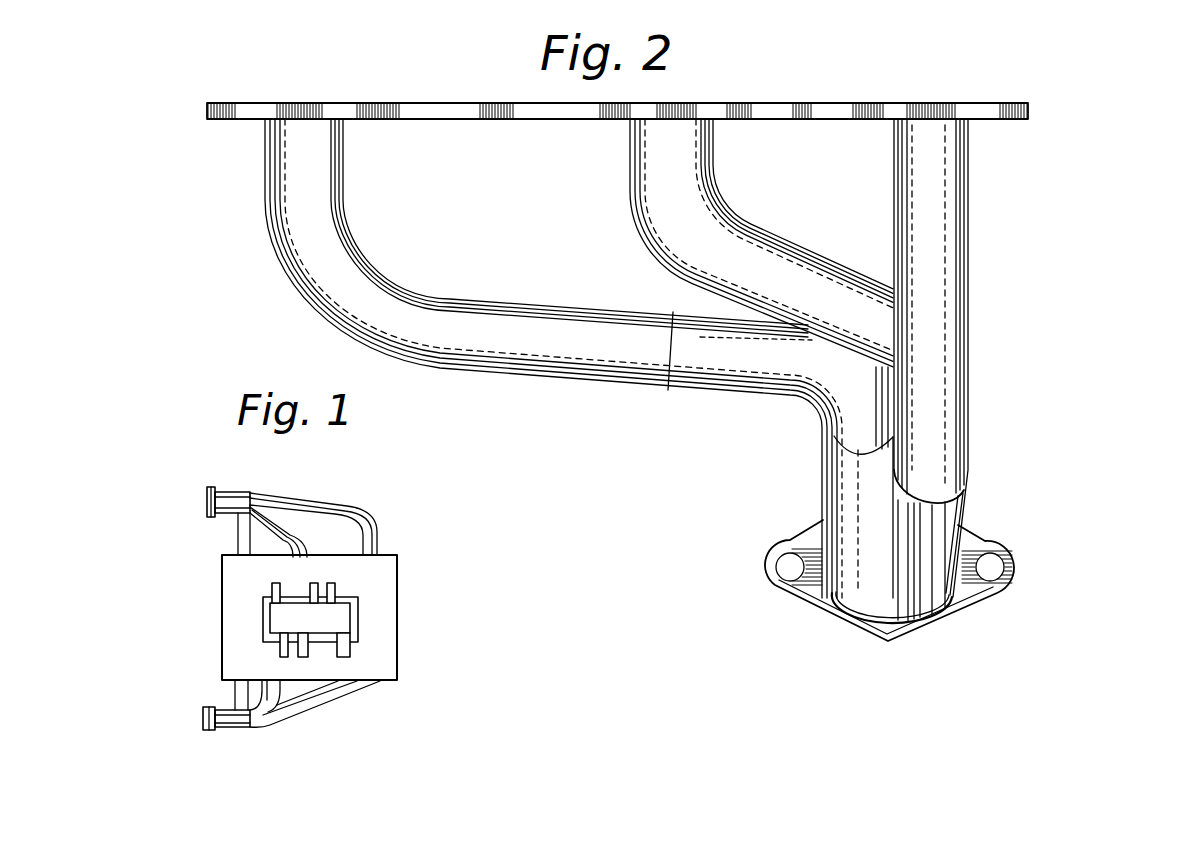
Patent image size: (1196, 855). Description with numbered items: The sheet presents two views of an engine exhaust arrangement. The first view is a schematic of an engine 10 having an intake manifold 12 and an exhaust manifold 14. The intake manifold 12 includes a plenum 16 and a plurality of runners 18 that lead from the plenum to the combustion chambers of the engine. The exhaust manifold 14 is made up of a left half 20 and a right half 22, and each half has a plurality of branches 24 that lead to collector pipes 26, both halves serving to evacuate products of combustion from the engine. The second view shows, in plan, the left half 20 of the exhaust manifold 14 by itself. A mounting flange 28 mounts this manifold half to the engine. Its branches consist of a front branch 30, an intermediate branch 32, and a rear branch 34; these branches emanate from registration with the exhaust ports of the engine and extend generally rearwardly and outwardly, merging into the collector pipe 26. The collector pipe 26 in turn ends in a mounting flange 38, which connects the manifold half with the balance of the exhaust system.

In FIG. 1, the engine 10 is at (414, 582).
In FIG. 1, the intake manifold 12 is at (367, 592).
In FIG. 1, the exhaust manifold 14 is at (340, 598).
In FIG. 1, the plenum 16 is at (352, 620).
In FIG. 1, the runners 18 is at (352, 647).
In FIG. 2, the left half 20 is at (640, 380).
In FIG. 1, the left half 20 is at (392, 464).
In FIG. 1, the right half 22 is at (318, 707).
In FIG. 1, the branches 24 is at (327, 459).
In FIG. 2, the collector pipe 26 is at (943, 540).
In FIG. 1, the collector pipe 26 is at (230, 497).
In FIG. 2, the mounting flange 28 is at (1028, 111).
In FIG. 2, the front branch 30 is at (281, 155).
In FIG. 2, the intermediate branch 32 is at (647, 162).
In FIG. 2, the rear branch 34 is at (913, 167).
In FIG. 2, the mounting flange 38 is at (973, 594).